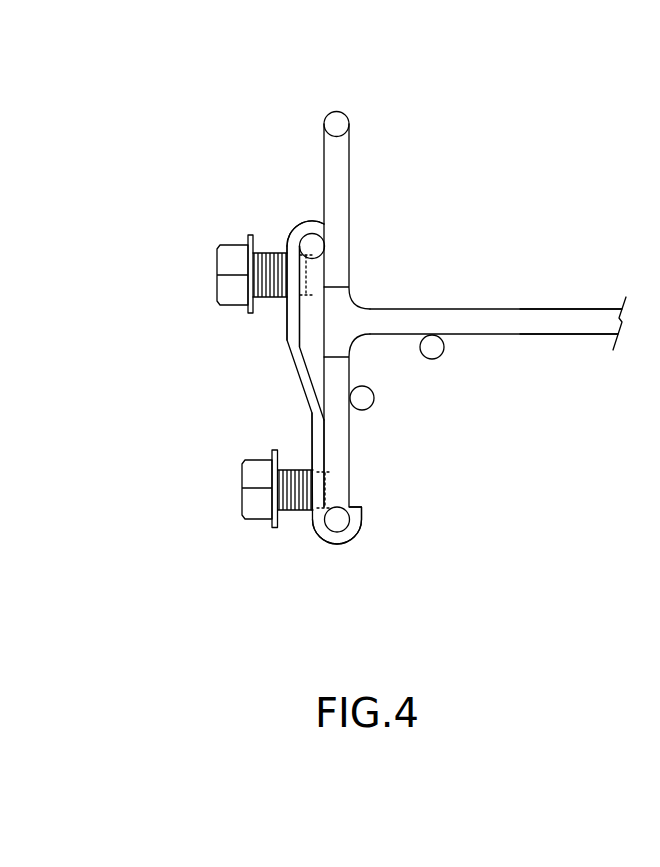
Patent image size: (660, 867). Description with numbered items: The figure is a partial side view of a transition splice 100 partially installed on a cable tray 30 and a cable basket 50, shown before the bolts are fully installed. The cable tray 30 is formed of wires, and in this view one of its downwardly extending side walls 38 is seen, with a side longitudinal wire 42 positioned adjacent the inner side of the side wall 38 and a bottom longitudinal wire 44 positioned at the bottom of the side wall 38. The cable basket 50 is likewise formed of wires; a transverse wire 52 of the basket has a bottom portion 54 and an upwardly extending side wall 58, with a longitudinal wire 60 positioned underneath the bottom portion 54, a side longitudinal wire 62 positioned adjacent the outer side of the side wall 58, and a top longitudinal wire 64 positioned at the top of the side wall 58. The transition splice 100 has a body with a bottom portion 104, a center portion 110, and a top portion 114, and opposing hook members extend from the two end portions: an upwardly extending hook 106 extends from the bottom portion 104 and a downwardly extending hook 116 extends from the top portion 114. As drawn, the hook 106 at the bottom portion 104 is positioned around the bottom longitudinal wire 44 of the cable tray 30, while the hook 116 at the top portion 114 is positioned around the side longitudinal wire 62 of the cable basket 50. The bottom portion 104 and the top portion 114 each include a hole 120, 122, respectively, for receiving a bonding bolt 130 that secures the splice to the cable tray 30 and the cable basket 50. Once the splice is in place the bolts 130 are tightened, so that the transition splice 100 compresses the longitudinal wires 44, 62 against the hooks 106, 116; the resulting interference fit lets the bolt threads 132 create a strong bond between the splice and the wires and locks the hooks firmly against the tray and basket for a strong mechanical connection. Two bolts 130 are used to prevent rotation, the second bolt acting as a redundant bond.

The cable tray 30 is at (495, 467).
The side wall 38 is at (338, 439).
The side longitudinal wire 42 is at (362, 398).
The bottom longitudinal wire 44 is at (337, 520).
The cable basket 50 is at (467, 158).
The transverse wire 52 is at (487, 308).
The bottom portion 54 is at (550, 322).
The side wall 58 is at (339, 158).
The longitudinal wire 60 is at (432, 347).
The side longitudinal wire 62 is at (313, 246).
The top longitudinal wire 64 is at (337, 122).
The transition splice 100 is at (237, 355).
The bottom portion 104 is at (315, 512).
The upwardly extending hook 106 is at (360, 527).
The center portion 110 is at (300, 362).
The top portion 114 is at (298, 230).
The downwardly extending hook 116 is at (322, 225).
The hole 120 is at (307, 513).
The hole 122 is at (283, 300).
The bolt 130 is at (235, 255).
The bolt threads 132 is at (283, 257).